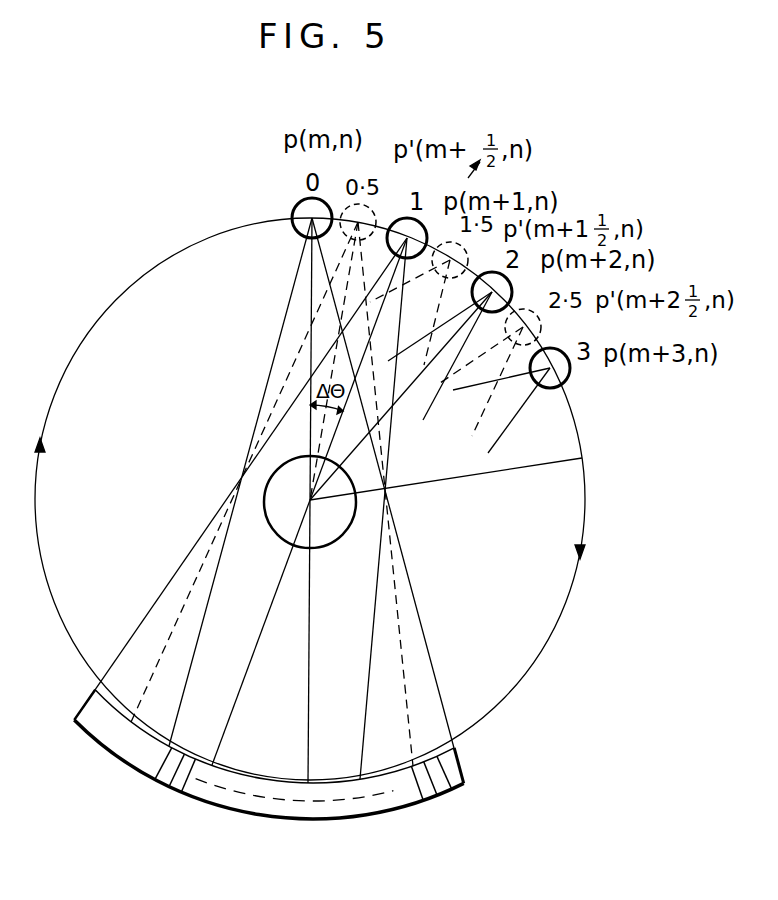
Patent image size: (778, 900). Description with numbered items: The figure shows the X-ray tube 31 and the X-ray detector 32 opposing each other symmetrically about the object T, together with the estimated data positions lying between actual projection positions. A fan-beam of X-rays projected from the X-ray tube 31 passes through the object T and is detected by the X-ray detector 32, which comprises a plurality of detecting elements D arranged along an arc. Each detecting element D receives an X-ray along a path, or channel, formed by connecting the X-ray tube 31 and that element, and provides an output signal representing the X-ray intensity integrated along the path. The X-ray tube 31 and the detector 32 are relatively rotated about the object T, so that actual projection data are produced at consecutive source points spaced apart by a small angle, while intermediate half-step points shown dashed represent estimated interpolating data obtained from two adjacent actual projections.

The X-ray tube 31 is at (296, 208).
The X-ray detector 32 is at (285, 824).
The object T is at (328, 537).
The detecting element D is at (460, 790).